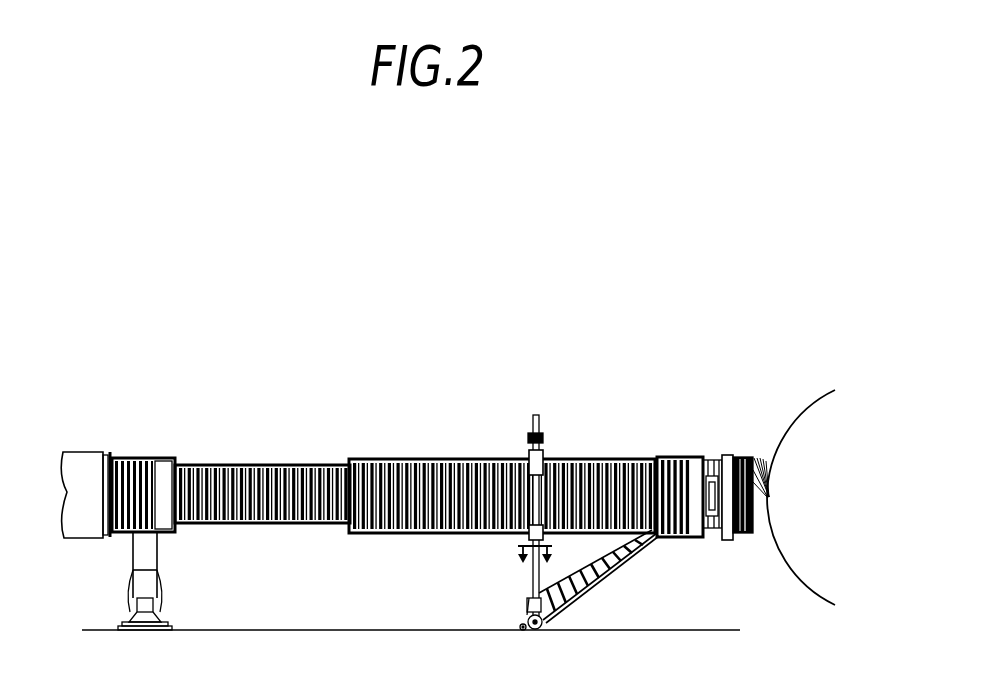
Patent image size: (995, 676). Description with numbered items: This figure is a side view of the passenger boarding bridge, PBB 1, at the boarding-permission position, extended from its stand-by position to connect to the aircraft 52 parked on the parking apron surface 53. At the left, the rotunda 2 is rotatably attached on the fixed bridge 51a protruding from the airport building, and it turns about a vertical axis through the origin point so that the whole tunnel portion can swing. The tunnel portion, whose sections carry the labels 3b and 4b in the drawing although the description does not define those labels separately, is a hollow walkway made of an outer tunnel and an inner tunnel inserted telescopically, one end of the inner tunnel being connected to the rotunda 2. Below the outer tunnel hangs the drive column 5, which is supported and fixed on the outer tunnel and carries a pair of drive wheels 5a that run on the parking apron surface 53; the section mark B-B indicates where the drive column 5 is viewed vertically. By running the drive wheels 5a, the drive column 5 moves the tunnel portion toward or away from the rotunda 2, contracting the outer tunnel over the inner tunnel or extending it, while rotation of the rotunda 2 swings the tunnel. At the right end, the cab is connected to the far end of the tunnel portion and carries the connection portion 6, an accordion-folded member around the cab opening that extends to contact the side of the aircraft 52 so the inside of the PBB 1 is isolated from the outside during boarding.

The PBB 1 is at (462, 426).
The rotunda 2 is at (150, 462).
The tunnel 3b is at (368, 478).
The tunnel end section 4b is at (708, 457).
The drive column 5 is at (538, 427).
The drive wheels 5a is at (547, 623).
The connection portion 6 is at (743, 457).
The fixed bridge 51a is at (82, 463).
The aircraft 52 is at (810, 402).
The parking apron surface 53 is at (342, 632).